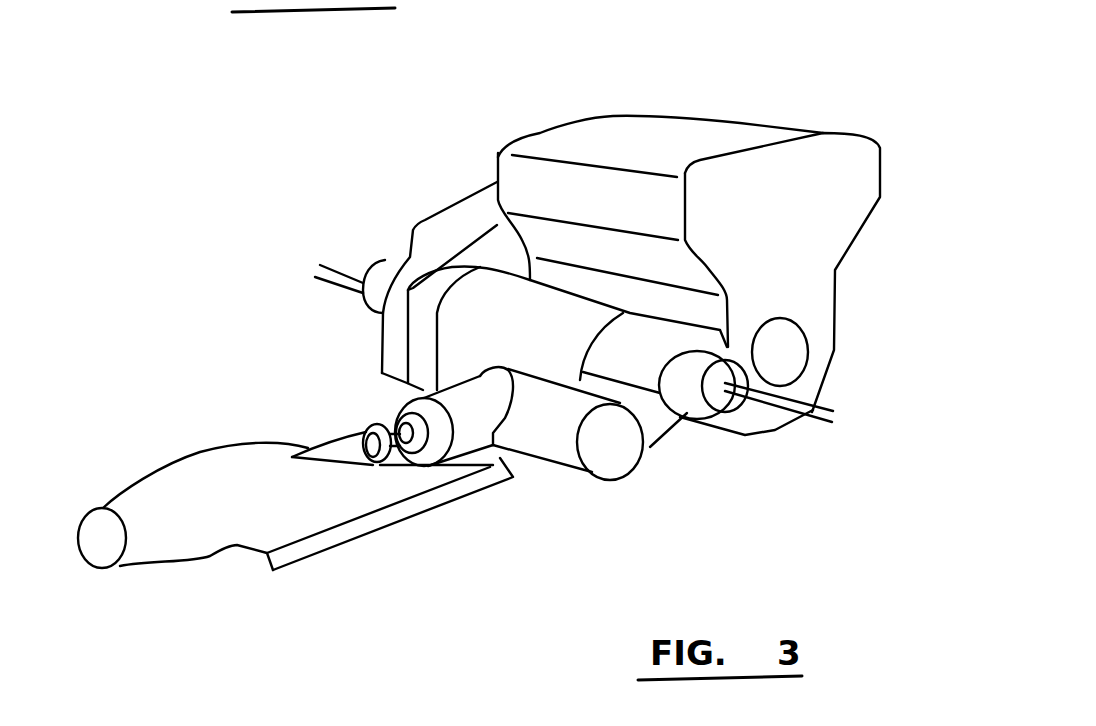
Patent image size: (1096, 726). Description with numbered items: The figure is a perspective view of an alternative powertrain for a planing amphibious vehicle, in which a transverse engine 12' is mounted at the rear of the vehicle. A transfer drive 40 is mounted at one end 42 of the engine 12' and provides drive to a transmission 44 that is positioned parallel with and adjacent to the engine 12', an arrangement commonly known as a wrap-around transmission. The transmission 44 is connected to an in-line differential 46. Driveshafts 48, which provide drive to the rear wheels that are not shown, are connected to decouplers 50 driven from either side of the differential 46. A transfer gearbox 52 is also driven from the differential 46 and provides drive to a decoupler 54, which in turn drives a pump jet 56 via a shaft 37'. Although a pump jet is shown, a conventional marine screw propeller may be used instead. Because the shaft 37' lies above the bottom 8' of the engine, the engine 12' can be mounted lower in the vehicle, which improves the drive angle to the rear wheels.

The transverse engine 12' is at (781, 207).
The end of the engine 42 is at (541, 136).
The transfer drive 40 is at (458, 223).
The transmission 44 is at (483, 320).
The in-line differential 46 is at (628, 348).
The driveshafts 48 is at (335, 275).
The decoupler 50 is at (377, 297).
The transfer gearbox 52 is at (610, 452).
The decoupler 54 is at (397, 393).
The pump jet 56 is at (173, 460).
The shaft 37' is at (368, 525).
The bottom of the engine 8' is at (731, 486).